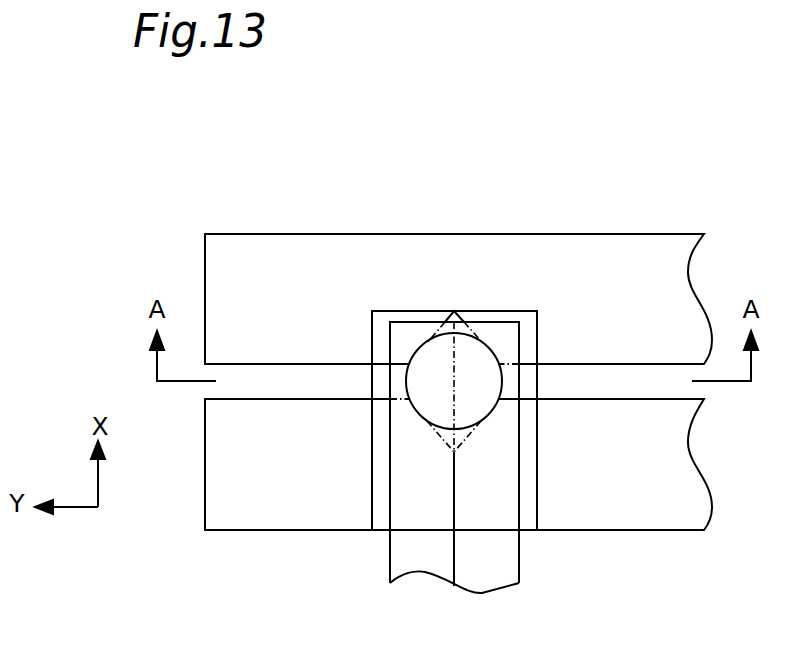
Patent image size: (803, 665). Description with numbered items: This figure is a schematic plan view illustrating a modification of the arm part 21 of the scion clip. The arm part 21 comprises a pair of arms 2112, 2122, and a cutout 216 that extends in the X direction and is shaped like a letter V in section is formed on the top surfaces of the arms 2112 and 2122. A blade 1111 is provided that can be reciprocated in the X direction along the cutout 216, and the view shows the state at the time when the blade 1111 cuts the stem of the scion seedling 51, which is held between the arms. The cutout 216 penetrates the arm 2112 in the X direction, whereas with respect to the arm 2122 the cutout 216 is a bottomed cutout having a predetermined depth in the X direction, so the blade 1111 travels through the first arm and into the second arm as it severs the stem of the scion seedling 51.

The arm part 21 is at (223, 175).
The arm 2112 is at (252, 418).
The arm 2122 is at (337, 257).
The scion seedling 51 is at (437, 358).
The cutout 216 is at (537, 335).
The blade 1111 is at (495, 553).